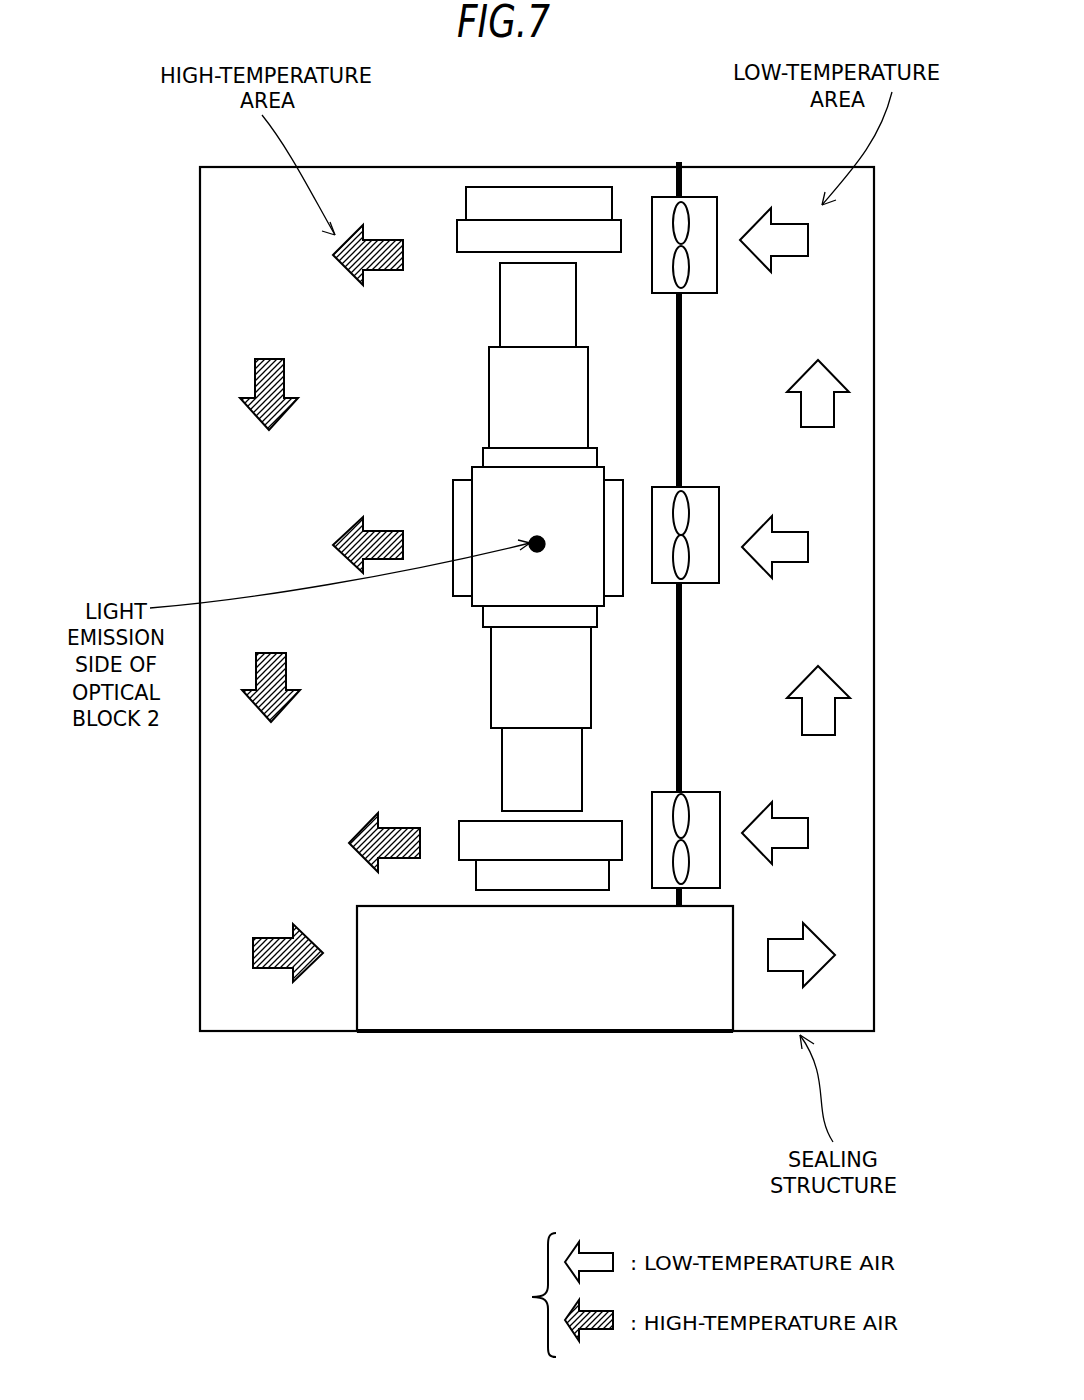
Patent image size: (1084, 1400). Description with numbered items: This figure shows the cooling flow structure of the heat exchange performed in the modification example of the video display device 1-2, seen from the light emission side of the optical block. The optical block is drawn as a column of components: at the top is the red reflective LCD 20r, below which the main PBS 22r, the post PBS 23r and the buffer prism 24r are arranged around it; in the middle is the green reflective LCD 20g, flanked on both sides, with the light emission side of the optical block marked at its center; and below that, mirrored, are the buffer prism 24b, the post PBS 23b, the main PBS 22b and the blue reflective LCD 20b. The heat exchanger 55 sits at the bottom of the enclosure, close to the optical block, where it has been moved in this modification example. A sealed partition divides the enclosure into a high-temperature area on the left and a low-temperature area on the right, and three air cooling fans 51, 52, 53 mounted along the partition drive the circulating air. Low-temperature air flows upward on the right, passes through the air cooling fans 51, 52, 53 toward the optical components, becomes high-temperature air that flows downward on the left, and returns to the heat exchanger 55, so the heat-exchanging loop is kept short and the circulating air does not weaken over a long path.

The video display device 1-2 is at (505, 131).
The red reflective LCD 20r is at (466, 217).
The main PBS 22r is at (500, 290).
The post PBS 23r is at (489, 388).
The buffer prism 24r is at (483, 457).
The green reflective LCD 20g is at (453, 493).
The buffer prism 24b is at (483, 620).
The post PBS 23b is at (491, 672).
The main PBS 22b is at (502, 770).
The blue reflective LCD 20b is at (459, 862).
The air cooling fan 51 is at (698, 293).
The air cooling fan 52 is at (700, 583).
The air cooling fan 53 is at (700, 792).
The heat exchanger 55 is at (357, 950).